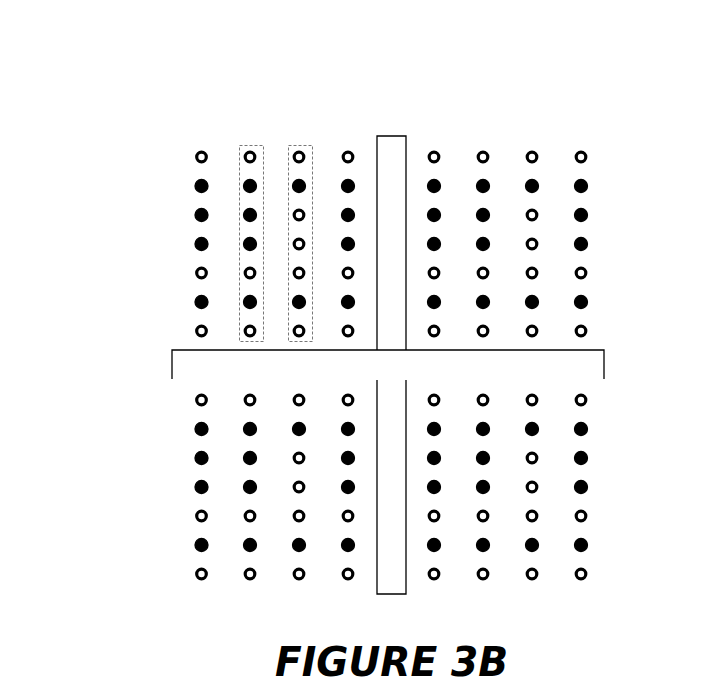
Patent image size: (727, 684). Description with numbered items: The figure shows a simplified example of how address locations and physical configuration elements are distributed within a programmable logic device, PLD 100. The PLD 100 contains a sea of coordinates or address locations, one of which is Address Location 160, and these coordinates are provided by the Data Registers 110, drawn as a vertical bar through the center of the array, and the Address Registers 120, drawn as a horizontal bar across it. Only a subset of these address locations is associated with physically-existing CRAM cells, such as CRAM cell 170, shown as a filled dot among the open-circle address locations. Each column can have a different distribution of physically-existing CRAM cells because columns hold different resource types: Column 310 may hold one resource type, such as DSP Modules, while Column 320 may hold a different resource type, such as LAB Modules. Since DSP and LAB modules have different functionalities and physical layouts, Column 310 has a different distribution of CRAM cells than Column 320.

The PLD 100 is at (138, 89).
The Data Registers 110 is at (392, 136).
The Address Registers 120 is at (604, 363).
The Address Location 160 is at (583, 150).
The CRAM cell 170 is at (586, 186).
The Column 310 is at (259, 145).
The Column 320 is at (298, 145).